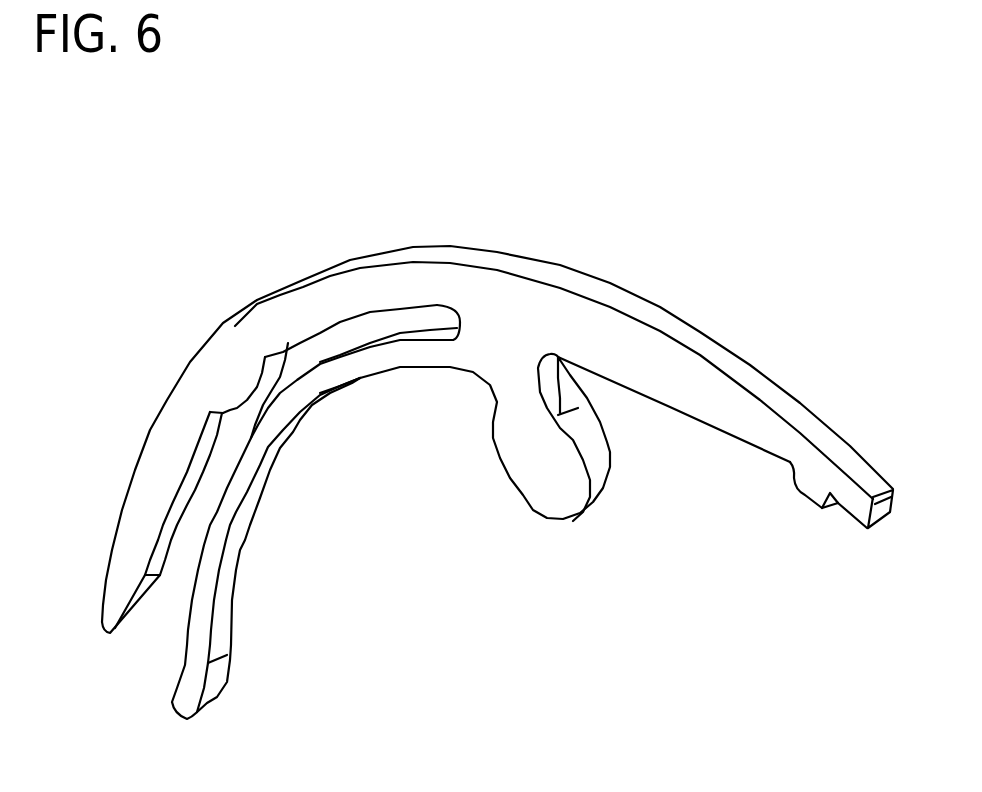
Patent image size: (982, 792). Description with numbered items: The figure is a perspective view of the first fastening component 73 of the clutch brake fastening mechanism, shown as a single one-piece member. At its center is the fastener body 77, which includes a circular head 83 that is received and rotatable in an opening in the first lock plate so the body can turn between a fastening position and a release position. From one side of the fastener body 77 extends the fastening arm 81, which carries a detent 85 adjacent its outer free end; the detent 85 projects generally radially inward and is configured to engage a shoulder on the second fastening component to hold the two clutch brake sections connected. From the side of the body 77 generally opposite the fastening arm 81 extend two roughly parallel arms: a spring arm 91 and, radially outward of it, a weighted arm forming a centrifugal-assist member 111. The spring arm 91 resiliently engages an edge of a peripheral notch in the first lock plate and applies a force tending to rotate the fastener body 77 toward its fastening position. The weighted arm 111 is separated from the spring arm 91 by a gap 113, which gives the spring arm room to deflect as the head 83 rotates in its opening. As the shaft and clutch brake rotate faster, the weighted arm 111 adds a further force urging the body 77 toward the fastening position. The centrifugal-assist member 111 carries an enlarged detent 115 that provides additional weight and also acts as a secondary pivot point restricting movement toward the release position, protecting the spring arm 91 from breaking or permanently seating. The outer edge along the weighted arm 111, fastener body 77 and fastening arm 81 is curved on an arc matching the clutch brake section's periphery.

The first fastening component 73 is at (190, 194).
The fastener body 77 is at (520, 307).
The fastening arm 81 is at (728, 411).
The circular head 83 is at (550, 495).
The detent 85 is at (812, 490).
The spring arm 91 is at (215, 603).
The centrifugal-assist member 111 is at (140, 515).
The gap 113 is at (209, 487).
The enlarged detent 115 is at (273, 368).